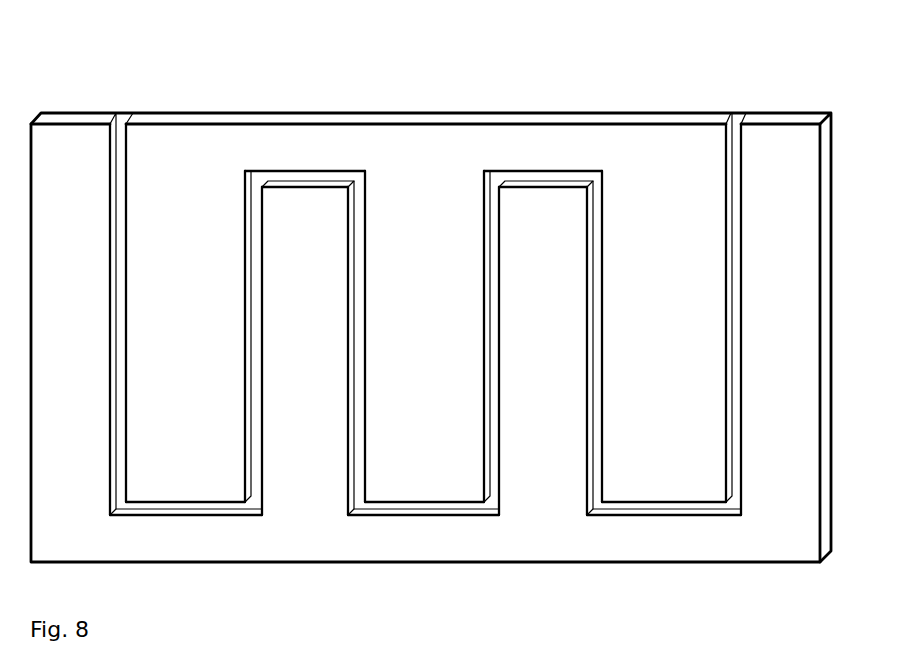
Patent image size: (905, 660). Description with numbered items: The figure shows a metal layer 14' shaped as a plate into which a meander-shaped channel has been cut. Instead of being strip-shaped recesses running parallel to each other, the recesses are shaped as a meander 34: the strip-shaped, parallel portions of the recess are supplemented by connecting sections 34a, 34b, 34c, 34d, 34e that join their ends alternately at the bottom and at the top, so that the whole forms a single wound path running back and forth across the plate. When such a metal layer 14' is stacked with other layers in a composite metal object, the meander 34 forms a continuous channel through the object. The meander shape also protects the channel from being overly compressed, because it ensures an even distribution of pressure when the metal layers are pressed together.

The metal layer 14' is at (431, 297).
The meander 34 is at (470, 335).
The connecting section 34a is at (158, 503).
The connecting section 34b is at (303, 177).
The connecting section 34c is at (390, 503).
The connecting section 34d is at (555, 177).
The connecting section 34e is at (643, 503).